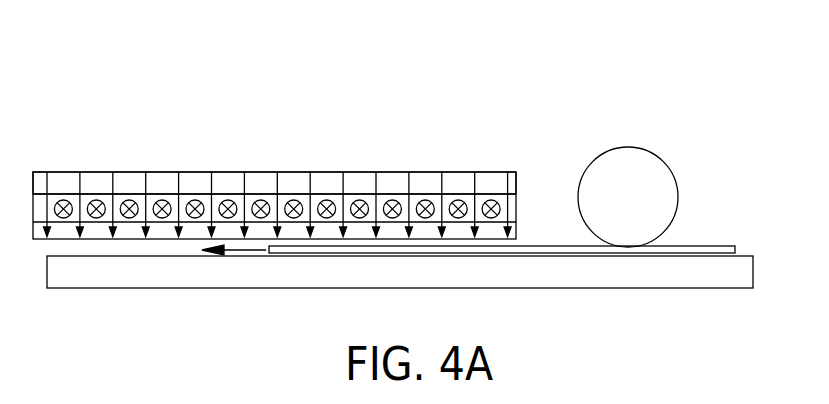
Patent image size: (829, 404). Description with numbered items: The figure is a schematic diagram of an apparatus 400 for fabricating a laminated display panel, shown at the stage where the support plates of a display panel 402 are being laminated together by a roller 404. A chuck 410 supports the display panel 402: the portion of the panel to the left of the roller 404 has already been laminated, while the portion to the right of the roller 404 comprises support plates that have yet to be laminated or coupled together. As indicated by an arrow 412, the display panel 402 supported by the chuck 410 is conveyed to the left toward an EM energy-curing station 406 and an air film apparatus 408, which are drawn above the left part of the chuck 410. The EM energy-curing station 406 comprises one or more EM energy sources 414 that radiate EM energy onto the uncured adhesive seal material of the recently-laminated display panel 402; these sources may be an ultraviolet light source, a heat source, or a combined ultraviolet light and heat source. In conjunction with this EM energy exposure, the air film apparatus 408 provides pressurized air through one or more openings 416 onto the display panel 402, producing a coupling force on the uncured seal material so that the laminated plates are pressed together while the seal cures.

The apparatus 400 is at (643, 60).
The display panel 402 is at (688, 246).
The roller 404 is at (617, 150).
The EM energy-curing station 406 is at (322, 195).
The air film apparatus 408 is at (125, 172).
The chuck 410 is at (160, 284).
The arrow 412 is at (239, 250).
The EM energy sources 414 is at (422, 200).
The openings 416 is at (242, 194).